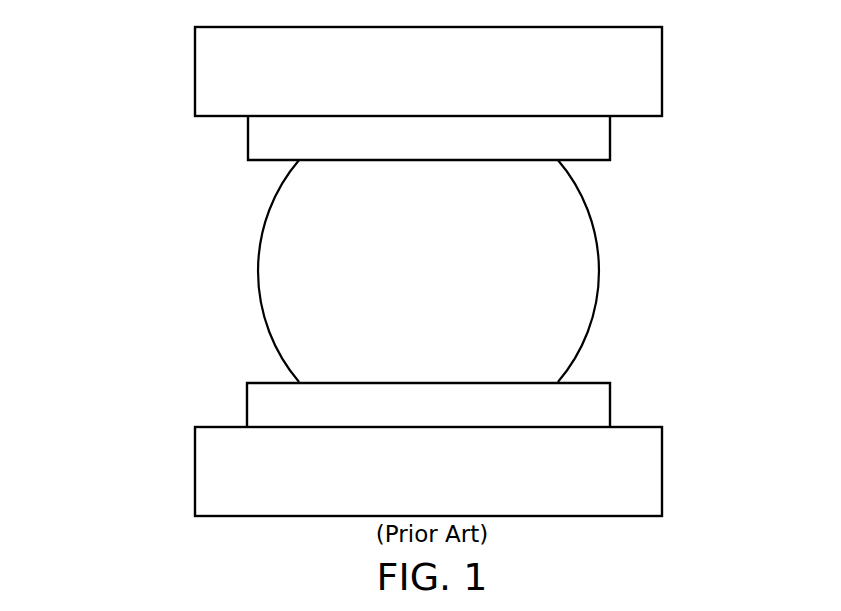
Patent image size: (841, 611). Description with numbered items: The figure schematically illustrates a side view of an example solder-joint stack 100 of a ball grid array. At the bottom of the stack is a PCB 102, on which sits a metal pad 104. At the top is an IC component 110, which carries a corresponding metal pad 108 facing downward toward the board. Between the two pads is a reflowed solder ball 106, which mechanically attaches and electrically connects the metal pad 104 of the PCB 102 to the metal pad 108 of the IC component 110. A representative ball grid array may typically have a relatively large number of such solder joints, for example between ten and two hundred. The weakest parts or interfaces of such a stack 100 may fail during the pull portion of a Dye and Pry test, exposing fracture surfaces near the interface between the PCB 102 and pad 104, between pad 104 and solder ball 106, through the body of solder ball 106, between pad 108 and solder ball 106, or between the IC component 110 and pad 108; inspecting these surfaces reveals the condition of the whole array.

The solder-joint stack 100 is at (116, 51).
The PCB 102 is at (662, 470).
The metal pad 104 is at (610, 405).
The reflowed solder ball 106 is at (599, 273).
The metal pad 108 is at (610, 137).
The IC component 110 is at (662, 70).